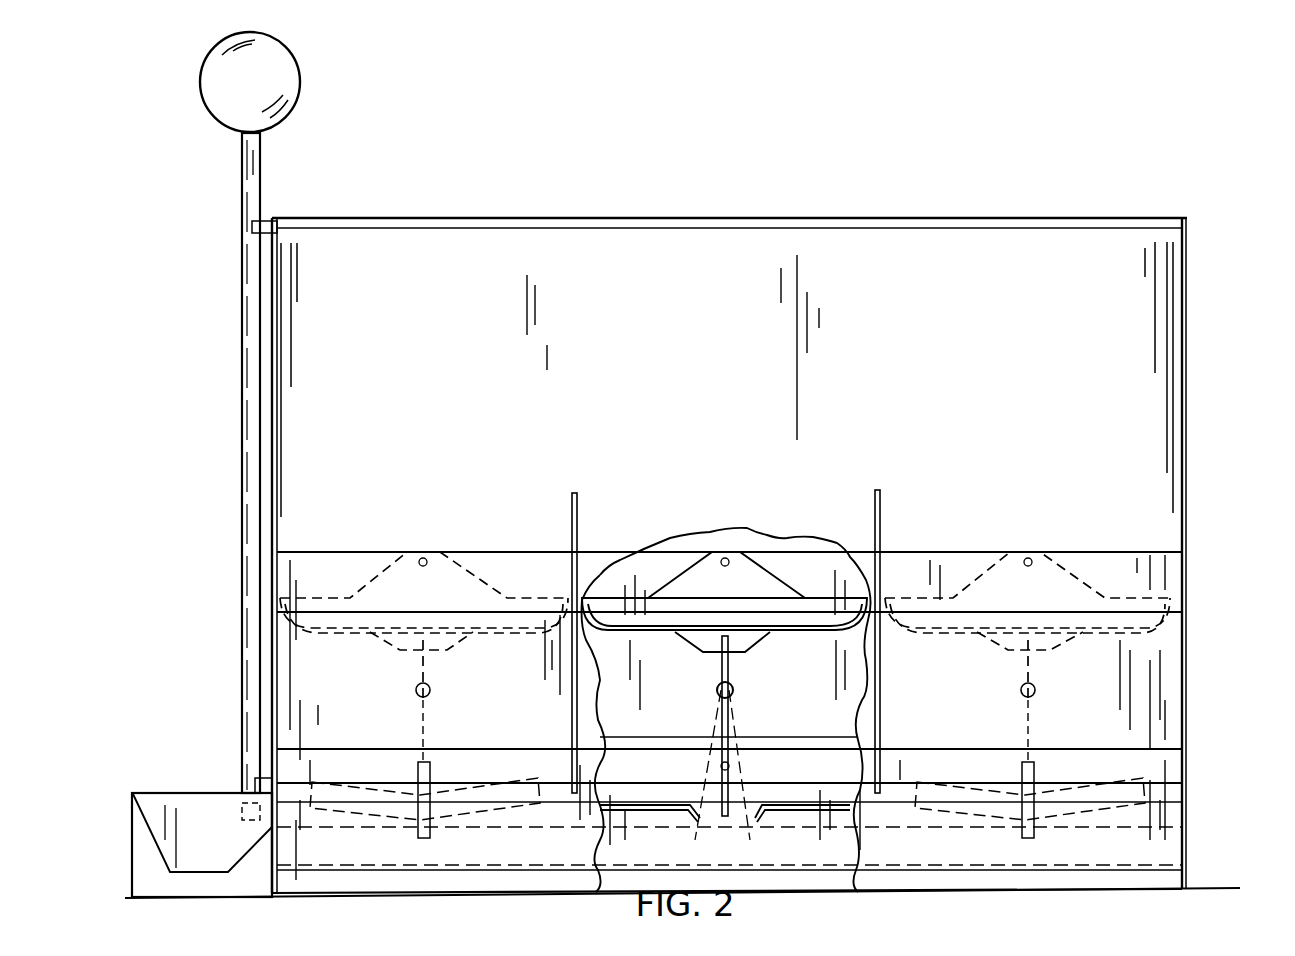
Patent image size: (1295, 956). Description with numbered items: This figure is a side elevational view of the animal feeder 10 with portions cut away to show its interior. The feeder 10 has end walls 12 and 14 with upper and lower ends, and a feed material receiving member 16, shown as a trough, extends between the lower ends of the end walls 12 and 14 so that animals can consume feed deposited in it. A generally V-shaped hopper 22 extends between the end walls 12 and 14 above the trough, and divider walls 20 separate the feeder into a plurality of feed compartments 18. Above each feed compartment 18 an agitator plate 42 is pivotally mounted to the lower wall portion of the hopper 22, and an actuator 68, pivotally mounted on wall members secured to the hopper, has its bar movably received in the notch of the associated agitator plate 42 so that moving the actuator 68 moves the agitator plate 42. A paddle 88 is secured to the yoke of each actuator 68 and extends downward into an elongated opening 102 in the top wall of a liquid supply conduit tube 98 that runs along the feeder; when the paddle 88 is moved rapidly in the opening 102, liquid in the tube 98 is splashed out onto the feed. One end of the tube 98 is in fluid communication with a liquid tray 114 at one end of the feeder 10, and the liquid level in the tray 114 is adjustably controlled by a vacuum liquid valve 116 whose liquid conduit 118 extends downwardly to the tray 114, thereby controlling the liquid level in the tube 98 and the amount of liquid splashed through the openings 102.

The animal feeder 10 is at (852, 178).
The end wall 12 is at (276, 421).
The end wall 14 is at (1187, 302).
The feed material receiving member 16 is at (1120, 846).
The feed compartment 18 is at (340, 727).
The divider wall 20 is at (578, 512).
The hopper 22 is at (1110, 210).
The agitator plate 42 is at (440, 584).
The actuator 68 is at (415, 690).
The paddle 88 is at (728, 790).
The liquid supply conduit tube 98 is at (787, 793).
The elongated opening 102 is at (740, 815).
The liquid tray 114 is at (131, 856).
The vacuum liquid valve 116 is at (265, 78).
The liquid conduit 118 is at (245, 426).